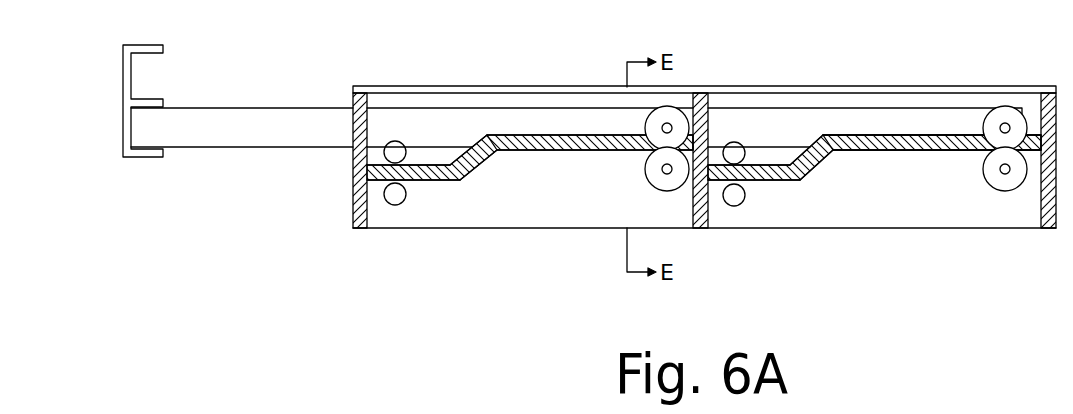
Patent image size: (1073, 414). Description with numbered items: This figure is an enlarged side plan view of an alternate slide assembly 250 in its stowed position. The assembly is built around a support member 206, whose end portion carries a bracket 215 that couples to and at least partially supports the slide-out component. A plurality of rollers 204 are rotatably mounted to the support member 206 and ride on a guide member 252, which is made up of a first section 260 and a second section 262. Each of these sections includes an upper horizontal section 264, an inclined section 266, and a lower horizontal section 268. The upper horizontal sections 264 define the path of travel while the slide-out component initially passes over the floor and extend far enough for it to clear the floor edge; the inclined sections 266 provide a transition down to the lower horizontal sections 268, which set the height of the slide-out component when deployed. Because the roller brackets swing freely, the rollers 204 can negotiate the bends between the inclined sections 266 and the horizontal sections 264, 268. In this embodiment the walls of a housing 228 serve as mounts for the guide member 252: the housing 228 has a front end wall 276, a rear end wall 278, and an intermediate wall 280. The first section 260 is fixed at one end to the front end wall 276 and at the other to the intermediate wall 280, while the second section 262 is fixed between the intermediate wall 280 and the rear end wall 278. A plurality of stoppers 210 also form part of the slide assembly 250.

The rollers 204 is at (662, 170).
The support member 206 is at (207, 143).
The stoppers 210 is at (397, 152).
The bracket 215 is at (130, 100).
The housing 228 is at (363, 86).
The alternate slide assembly 250 is at (345, 278).
The guide member 252 is at (510, 138).
The first section 260 is at (590, 142).
The second section 262 is at (932, 142).
The upper horizontal section 264 is at (920, 143).
The inclined section 266 is at (482, 160).
The lower horizontal section 268 is at (412, 170).
The front end wall 276 is at (365, 228).
The rear end wall 278 is at (1052, 228).
The intermediate wall 280 is at (703, 228).